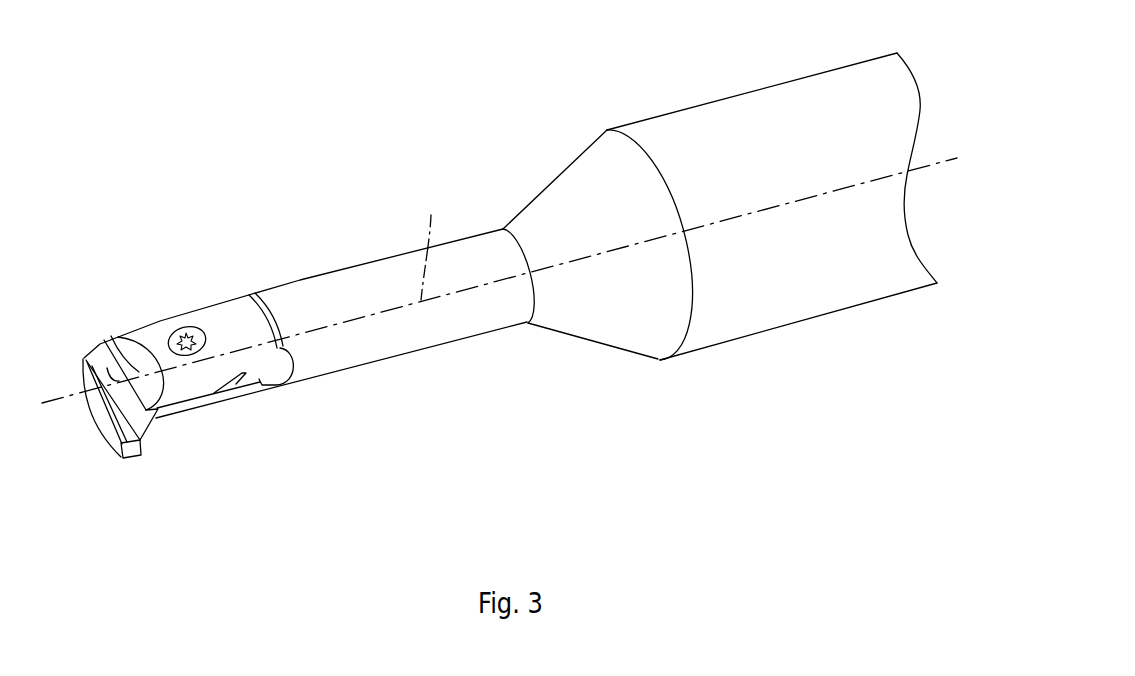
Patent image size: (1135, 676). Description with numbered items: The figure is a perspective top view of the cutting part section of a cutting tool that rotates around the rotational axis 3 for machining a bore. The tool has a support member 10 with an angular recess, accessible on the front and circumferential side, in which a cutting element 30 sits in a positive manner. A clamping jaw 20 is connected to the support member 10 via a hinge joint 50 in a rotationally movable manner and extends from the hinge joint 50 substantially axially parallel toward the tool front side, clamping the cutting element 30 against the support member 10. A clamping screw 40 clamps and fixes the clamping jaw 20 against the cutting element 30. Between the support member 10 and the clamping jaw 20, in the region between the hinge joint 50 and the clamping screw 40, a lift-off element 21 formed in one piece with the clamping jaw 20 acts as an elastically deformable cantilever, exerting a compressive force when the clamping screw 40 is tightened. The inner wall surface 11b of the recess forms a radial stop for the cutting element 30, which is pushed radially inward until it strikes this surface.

The support member 10 is at (803, 293).
The clamping jaw 20 is at (237, 313).
The lift-off element 21 is at (227, 393).
The cutting element 30 is at (129, 458).
The clamping screw 40 is at (188, 330).
The hinge joint 50 is at (293, 361).
The inner wall surface 11b is at (136, 372).
The rotational axis 3 is at (428, 244).